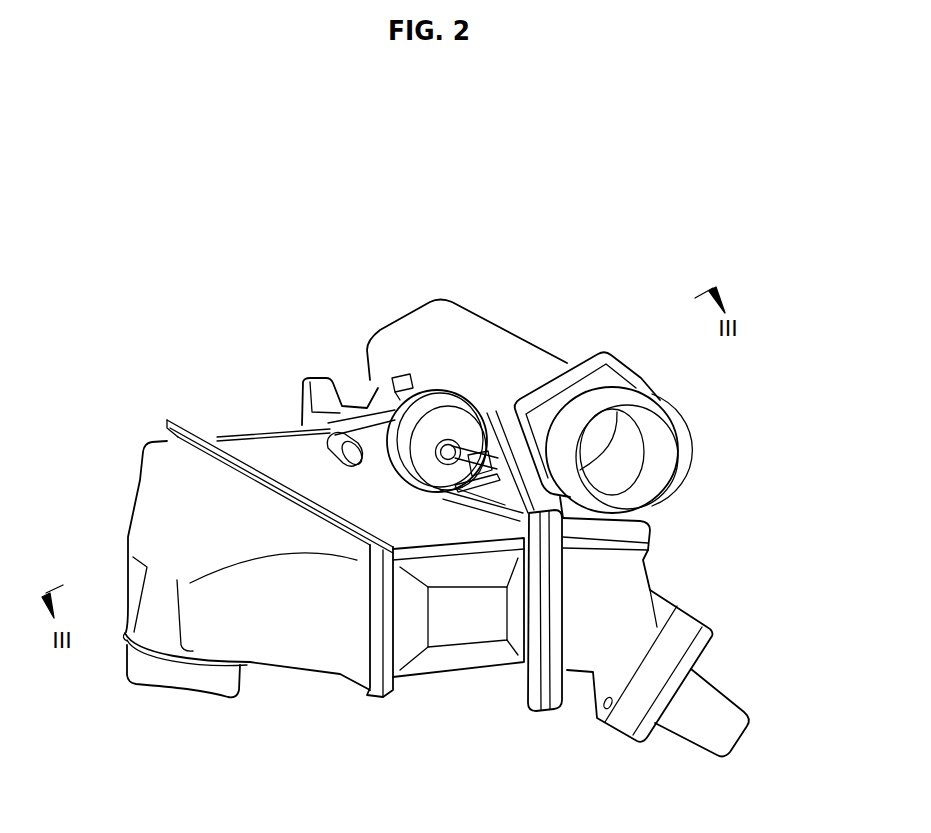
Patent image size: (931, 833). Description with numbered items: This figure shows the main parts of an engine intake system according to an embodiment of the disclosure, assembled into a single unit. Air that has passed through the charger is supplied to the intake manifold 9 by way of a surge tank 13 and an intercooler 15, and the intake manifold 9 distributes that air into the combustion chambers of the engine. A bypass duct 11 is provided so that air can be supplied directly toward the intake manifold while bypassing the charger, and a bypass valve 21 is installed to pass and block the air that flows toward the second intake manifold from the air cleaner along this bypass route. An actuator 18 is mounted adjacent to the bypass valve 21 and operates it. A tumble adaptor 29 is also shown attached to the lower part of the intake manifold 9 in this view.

The intake manifold 9 is at (638, 607).
The bypass duct 11 is at (452, 313).
The surge tank 13 is at (167, 485).
The intercooler 15 is at (460, 627).
The actuator 18 is at (395, 418).
The bypass valve 21 is at (600, 440).
The tumble adaptor 29 is at (723, 730).